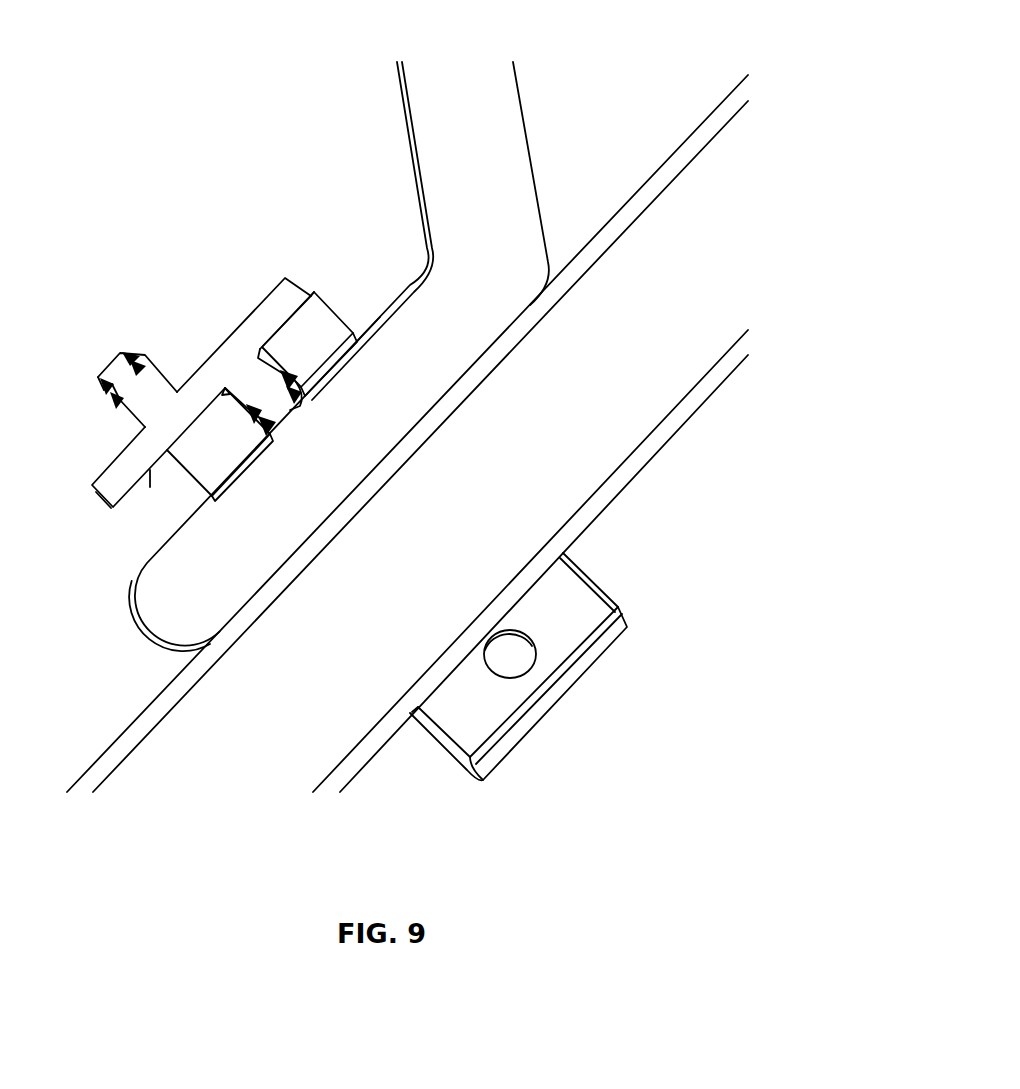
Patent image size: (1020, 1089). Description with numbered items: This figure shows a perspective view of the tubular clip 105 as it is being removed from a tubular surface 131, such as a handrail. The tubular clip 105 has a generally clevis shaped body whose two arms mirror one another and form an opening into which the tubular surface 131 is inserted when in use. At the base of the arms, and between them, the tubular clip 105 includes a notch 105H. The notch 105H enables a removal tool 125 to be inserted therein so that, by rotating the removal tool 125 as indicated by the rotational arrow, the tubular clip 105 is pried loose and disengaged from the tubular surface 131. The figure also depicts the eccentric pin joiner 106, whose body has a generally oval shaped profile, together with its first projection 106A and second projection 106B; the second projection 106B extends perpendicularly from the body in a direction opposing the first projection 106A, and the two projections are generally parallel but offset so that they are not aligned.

The removal tool 125 is at (483, 99).
The tubular surface 131 is at (222, 723).
The tubular clip 105 is at (168, 478).
The notch 105H is at (358, 335).
The eccentric pin joiner 106 is at (277, 302).
The first projection 106A is at (138, 353).
The second projection 106B is at (275, 403).